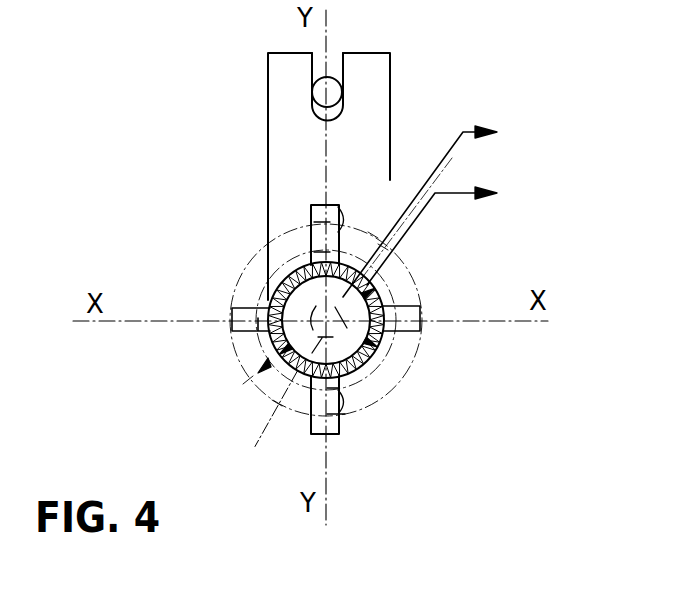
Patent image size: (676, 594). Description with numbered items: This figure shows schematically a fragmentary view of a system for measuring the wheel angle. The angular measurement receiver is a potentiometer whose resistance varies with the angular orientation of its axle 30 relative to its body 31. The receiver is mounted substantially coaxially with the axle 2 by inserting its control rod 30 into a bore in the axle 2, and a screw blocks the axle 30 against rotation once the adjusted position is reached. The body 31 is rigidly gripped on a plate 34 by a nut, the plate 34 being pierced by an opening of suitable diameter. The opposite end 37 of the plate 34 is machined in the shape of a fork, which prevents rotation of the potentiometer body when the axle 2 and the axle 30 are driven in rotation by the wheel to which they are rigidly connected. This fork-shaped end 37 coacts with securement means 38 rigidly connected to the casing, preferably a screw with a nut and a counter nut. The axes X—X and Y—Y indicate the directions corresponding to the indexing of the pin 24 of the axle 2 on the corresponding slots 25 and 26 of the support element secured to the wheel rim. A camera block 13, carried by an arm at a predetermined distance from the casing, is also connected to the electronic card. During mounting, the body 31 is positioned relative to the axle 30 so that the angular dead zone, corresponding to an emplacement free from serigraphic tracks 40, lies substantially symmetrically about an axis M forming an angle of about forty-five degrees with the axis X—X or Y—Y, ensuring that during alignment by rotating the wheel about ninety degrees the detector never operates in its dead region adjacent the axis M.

The axle 2 is at (408, 370).
The camera block 13 is at (262, 370).
The pin 24 is at (311, 205).
The slot 25 is at (232, 331).
The slot 26 is at (340, 205).
The axle of the receiver 30 is at (264, 424).
The body of the receiver 31 is at (283, 288).
The plate 34 is at (268, 202).
The end in the form of a fork 37 is at (390, 85).
The securement means 38 is at (312, 92).
The serigraphic tracks 40 is at (378, 282).
The axis M is at (408, 219).